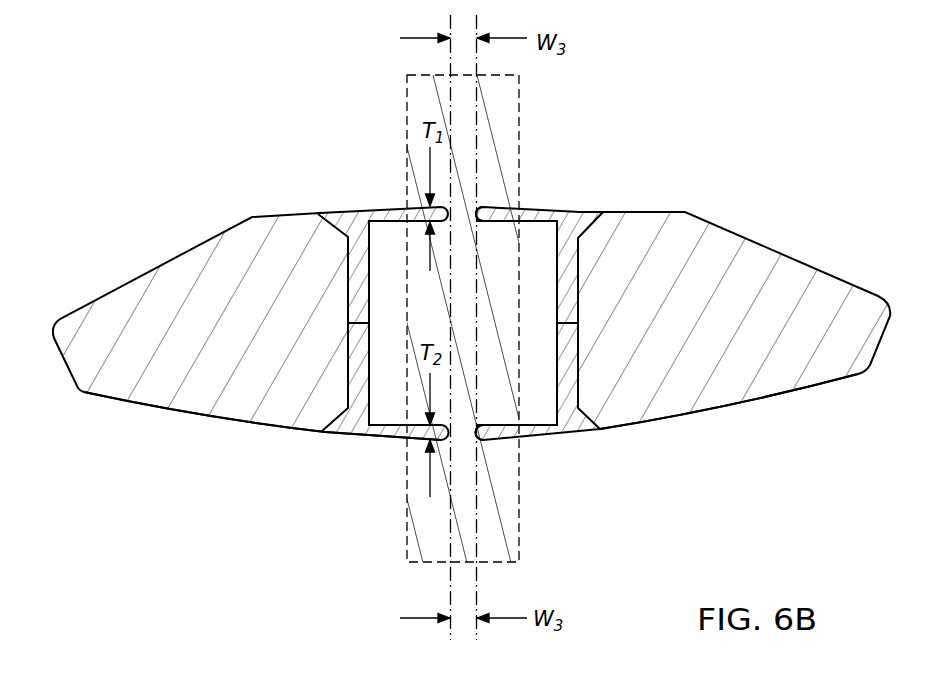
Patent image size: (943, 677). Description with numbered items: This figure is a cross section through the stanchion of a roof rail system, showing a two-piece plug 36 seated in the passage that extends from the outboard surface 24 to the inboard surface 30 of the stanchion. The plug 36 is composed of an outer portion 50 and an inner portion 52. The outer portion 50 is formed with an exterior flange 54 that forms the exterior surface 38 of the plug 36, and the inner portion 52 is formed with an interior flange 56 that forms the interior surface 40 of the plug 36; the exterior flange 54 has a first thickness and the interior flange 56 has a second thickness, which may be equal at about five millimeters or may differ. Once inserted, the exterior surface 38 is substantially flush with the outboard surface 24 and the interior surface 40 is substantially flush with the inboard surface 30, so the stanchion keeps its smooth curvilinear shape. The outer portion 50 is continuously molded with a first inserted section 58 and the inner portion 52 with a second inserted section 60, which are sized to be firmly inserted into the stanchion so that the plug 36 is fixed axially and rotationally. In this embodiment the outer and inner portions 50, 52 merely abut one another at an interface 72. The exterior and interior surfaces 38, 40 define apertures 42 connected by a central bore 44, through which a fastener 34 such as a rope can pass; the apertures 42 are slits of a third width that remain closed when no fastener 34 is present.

The outboard surface 24 is at (683, 212).
The inboard surface 30 is at (787, 397).
The fastener 34 is at (407, 85).
The plug 36 is at (369, 495).
The exterior surface 38 is at (533, 206).
The interior surface 40 is at (533, 442).
The apertures 42 is at (463, 210).
The central bore 44 is at (538, 388).
The outer portion 50 is at (364, 190).
The inner portion 52 is at (356, 463).
The exterior flange 54 is at (575, 212).
The interior flange 56 is at (578, 440).
The first inserted section 58 is at (347, 258).
The second inserted section 60 is at (345, 381).
The interface 72 is at (578, 323).